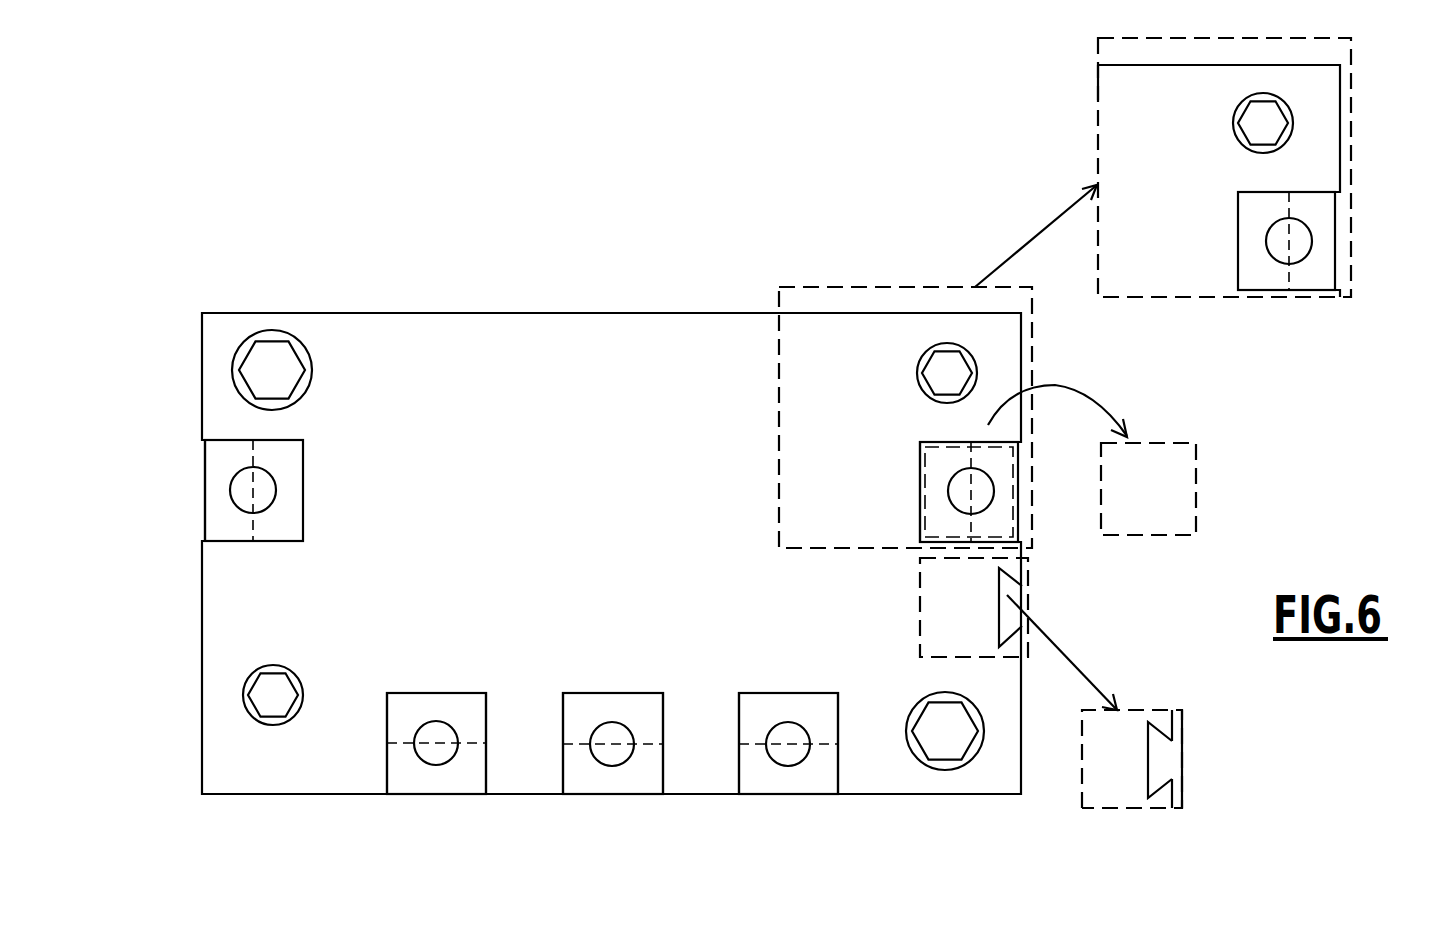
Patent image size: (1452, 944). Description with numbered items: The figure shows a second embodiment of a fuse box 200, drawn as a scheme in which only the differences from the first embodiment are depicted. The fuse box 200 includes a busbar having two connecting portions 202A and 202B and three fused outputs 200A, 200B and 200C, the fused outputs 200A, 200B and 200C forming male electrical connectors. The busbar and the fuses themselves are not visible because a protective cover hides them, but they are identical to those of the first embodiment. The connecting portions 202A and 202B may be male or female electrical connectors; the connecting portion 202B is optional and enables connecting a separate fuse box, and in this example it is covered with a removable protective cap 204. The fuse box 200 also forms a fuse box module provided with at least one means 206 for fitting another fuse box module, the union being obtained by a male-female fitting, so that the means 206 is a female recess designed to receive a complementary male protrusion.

The fuse box 200 is at (533, 198).
The fused output 200A is at (413, 775).
The fused output 200B is at (589, 775).
The fused output 200C is at (762, 775).
The connecting portion 202A is at (223, 461).
The connecting portion 202B is at (1317, 273).
The protective cap 204 is at (1163, 498).
The means for fitting another fuse box module 206 is at (1172, 757).